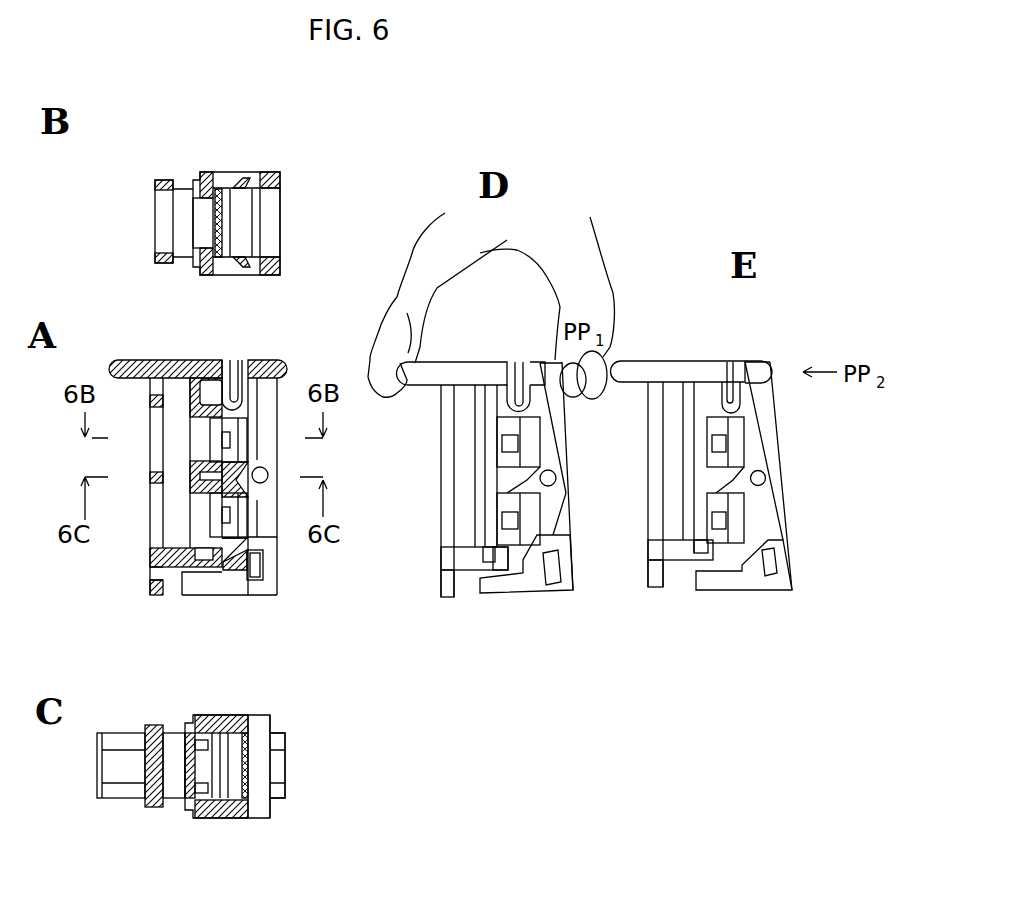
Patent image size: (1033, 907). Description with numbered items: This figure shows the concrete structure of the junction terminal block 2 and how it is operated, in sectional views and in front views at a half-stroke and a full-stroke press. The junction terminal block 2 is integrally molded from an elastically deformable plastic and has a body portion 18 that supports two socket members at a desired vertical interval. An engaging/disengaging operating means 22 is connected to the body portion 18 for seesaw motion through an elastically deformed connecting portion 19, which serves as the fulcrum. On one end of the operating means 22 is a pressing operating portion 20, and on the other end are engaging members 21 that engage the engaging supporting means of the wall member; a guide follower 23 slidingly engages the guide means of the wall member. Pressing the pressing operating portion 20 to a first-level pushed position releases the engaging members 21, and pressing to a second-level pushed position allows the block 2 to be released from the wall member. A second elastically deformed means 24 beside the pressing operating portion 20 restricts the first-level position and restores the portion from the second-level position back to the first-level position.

The junction terminal block 2 is at (168, 153).
The body portion 18 is at (157, 533).
The elastically deformed connecting portion 19 is at (230, 477).
The pressing operating portion 20 is at (287, 360).
The engaging member 21 is at (193, 177).
The engaging/disengaging operating means 22 is at (292, 185).
The guide follower 23 is at (153, 185).
The second elastically deformed means 24 is at (238, 360).